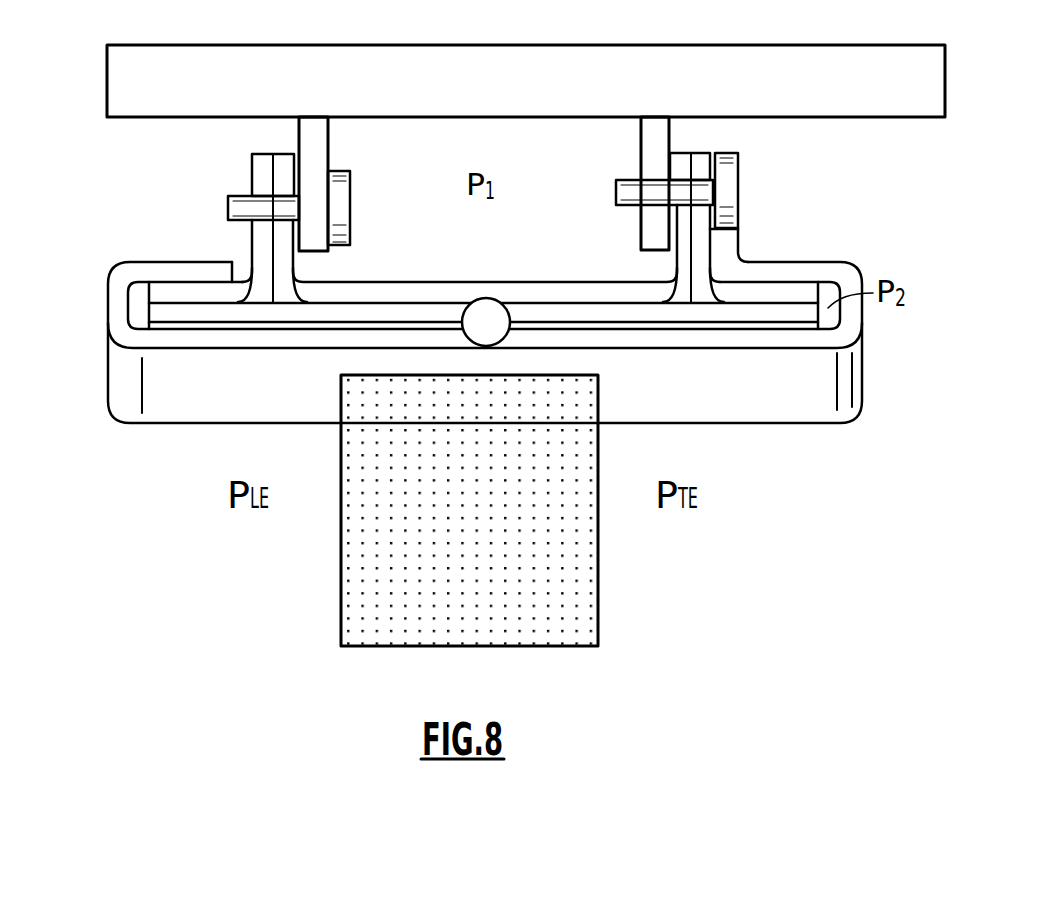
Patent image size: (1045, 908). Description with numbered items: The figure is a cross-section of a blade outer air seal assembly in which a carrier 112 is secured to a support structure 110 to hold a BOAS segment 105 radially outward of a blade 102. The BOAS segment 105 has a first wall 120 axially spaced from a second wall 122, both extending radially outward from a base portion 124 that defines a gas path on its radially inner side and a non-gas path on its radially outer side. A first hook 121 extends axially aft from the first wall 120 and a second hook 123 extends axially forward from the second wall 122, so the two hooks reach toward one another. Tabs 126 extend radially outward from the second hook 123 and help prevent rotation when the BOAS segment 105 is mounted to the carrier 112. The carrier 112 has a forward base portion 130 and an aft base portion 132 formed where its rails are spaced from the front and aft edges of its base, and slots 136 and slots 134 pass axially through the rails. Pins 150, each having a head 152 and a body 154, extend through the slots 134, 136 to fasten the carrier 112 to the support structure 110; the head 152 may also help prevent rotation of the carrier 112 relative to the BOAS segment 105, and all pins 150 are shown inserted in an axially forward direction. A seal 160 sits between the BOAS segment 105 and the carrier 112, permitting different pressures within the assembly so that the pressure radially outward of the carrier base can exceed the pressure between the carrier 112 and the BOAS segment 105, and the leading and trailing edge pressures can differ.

The blade 102 is at (491, 511).
The BOAS segment 105 is at (120, 373).
The support structure 110 is at (357, 65).
The carrier 112 is at (258, 234).
The first wall 120 is at (120, 296).
The first hook 121 is at (147, 270).
The second wall 122 is at (852, 307).
The second hook 123 is at (825, 267).
The base portion 124 is at (128, 331).
The tabs 126 is at (714, 233).
The forward base portion 130 is at (181, 296).
The aft base portion 132 is at (790, 297).
The slots 134 is at (697, 177).
The slots 136 is at (262, 170).
The pins 150 is at (242, 203).
The head 152 is at (343, 192).
The body 154 is at (240, 222).
The seal 160 is at (483, 310).